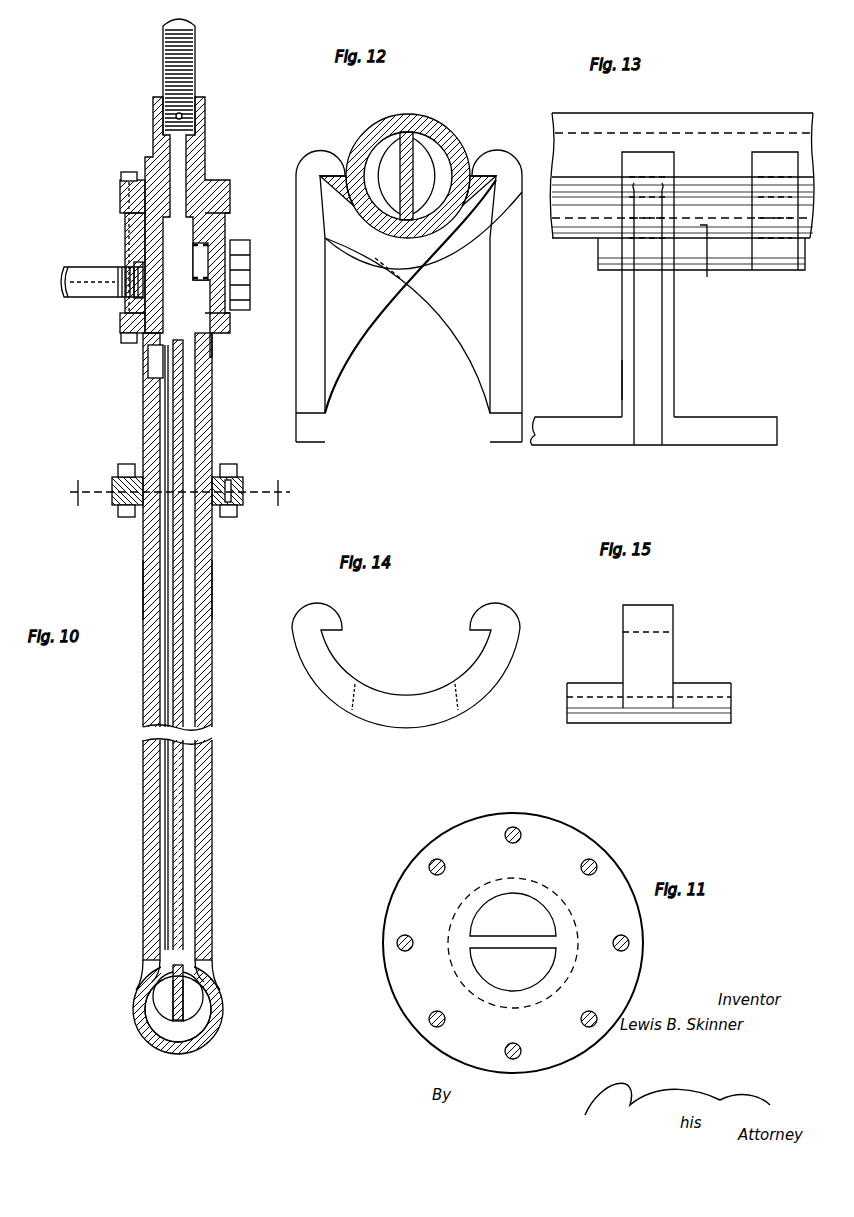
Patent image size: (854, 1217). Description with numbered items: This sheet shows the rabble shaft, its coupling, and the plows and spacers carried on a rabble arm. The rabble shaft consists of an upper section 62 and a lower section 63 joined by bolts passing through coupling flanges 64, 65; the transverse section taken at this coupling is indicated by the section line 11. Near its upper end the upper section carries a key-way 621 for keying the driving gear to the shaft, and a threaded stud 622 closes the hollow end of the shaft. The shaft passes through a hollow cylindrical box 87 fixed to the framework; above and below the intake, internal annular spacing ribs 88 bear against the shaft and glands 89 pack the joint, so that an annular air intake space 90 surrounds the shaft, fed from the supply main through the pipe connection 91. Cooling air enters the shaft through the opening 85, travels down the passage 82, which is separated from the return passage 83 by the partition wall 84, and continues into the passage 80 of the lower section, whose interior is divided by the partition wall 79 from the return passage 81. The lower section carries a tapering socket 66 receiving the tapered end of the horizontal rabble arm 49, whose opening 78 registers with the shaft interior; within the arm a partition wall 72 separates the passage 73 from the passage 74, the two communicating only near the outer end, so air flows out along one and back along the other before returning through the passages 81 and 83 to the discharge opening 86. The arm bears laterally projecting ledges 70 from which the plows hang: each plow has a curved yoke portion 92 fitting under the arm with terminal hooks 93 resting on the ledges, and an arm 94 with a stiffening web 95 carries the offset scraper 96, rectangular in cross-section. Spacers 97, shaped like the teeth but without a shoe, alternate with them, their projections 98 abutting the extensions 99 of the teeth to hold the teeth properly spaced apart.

In FIG. 10, the threaded stud 622 is at (197, 56).
In FIG. 10, the key-way 621 is at (152, 118).
In FIG. 10, the glands 89 is at (229, 180).
In FIG. 10, the internal annular spacing ribs 88 is at (206, 252).
In FIG. 10, the opening 85 is at (236, 262).
In FIG. 10, the hollow cylindrical box 87 is at (126, 240).
In FIG. 10, the annular air intake space 90 is at (134, 262).
In FIG. 10, the pipe connection 91 is at (66, 300).
In FIG. 10, the opening 86 is at (146, 383).
In FIG. 10, the upper section 62 is at (213, 412).
In FIG. 10, the lower section 63 is at (213, 592).
In FIG. 10, the partition wall 84 is at (172, 426).
In FIG. 10, the passage 82 is at (190, 447).
In FIG. 10, the passage 83 is at (172, 452).
In FIG. 10, the coupling flange 64 is at (244, 488).
In FIG. 10, the coupling flange 65 is at (244, 502).
In FIG. 11, the coupling flange 65 is at (598, 840).
In FIG. 10, the section line 11 is at (178, 493).
In FIG. 10, the partition wall 79 is at (180, 792).
In FIG. 11, the partition wall 79 is at (518, 935).
In FIG. 10, the air passage 80 is at (190, 864).
In FIG. 11, the air passage 80 is at (515, 910).
In FIG. 10, the air passage 81 is at (164, 876).
In FIG. 11, the air passage 81 is at (513, 969).
In FIG. 10, the tapering socket 66 is at (216, 988).
In FIG. 10, the opening 78 is at (150, 1002).
In FIG. 10, the passage 74 is at (165, 1008).
In FIG. 12, the passage 74 is at (386, 176).
In FIG. 10, the passage 73 is at (210, 1010).
In FIG. 12, the passage 73 is at (425, 176).
In FIG. 10, the partition wall 72 is at (162, 1030).
In FIG. 12, the partition wall 72 is at (414, 160).
In FIG. 12, the ledges 70 is at (337, 168).
In FIG. 13, the ledges 70 is at (596, 178).
In FIG. 12, the terminal hooks 93 is at (345, 160).
In FIG. 12, the rabble arm 49 is at (442, 128).
In FIG. 13, the rabble arm 49 is at (730, 122).
In FIG. 12, the extensions 99 is at (380, 262).
In FIG. 13, the extensions 99 is at (702, 262).
In FIG. 12, the curved yoke portion 92 is at (463, 245).
In FIG. 13, the curved yoke portion 92 is at (632, 240).
In FIG. 12, the stiffening web 95 is at (360, 322).
In FIG. 13, the stiffening web 95 is at (655, 353).
In FIG. 12, the arm 94 is at (300, 314).
In FIG. 13, the arm 94 is at (621, 369).
In FIG. 12, the scraper 96 is at (322, 428).
In FIG. 13, the scraper 96 is at (588, 442).
In FIG. 13, the spacers 97 is at (782, 236).
In FIG. 14, the spacers 97 is at (486, 690).
In FIG. 15, the spacers 97 is at (668, 652).
In FIG. 13, the projections 98 is at (736, 270).
In FIG. 14, the projections 98 is at (380, 712).
In FIG. 15, the projections 98 is at (705, 723).